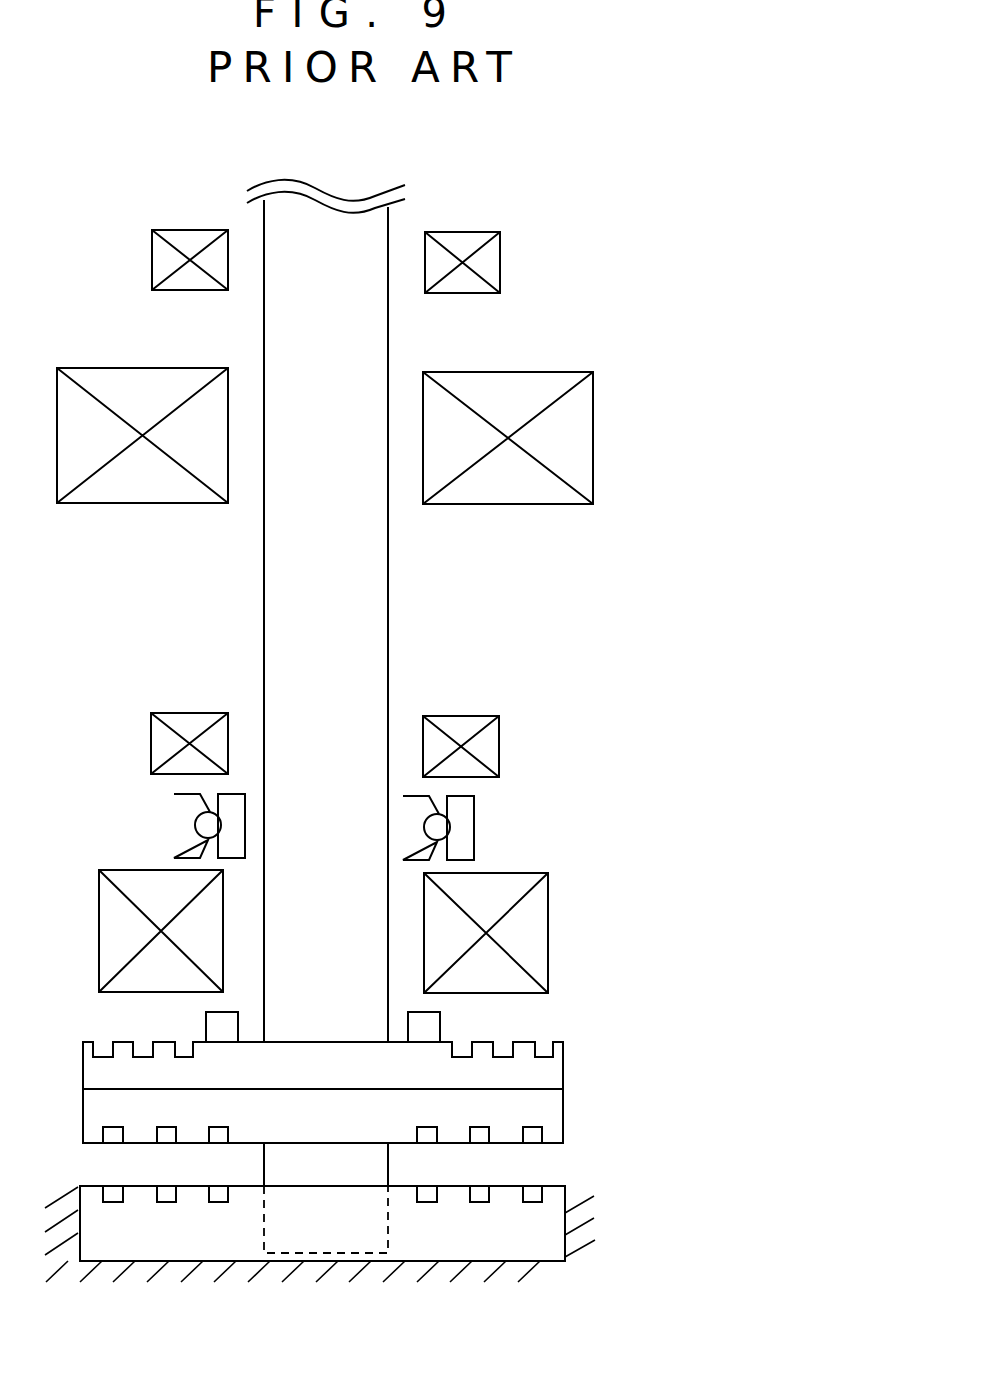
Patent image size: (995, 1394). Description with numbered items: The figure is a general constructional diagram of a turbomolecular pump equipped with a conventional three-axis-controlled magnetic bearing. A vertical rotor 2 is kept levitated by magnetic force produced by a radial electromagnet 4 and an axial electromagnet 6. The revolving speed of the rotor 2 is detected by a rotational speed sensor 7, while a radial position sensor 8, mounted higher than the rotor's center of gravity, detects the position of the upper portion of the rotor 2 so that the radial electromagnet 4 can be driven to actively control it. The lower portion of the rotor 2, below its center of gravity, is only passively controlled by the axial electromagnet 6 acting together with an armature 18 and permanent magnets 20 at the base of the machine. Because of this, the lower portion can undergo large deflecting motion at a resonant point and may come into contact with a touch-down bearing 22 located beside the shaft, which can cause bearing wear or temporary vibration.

The rotor 2 is at (388, 221).
The radial electromagnet 4 is at (593, 382).
The axial electromagnet 6 is at (548, 918).
The rotational speed sensor 7 is at (499, 730).
The radial position sensor 8 is at (500, 263).
The armature 18 is at (563, 1075).
The permanent magnets 20 is at (542, 1137).
The touch-down bearing 22 is at (475, 828).